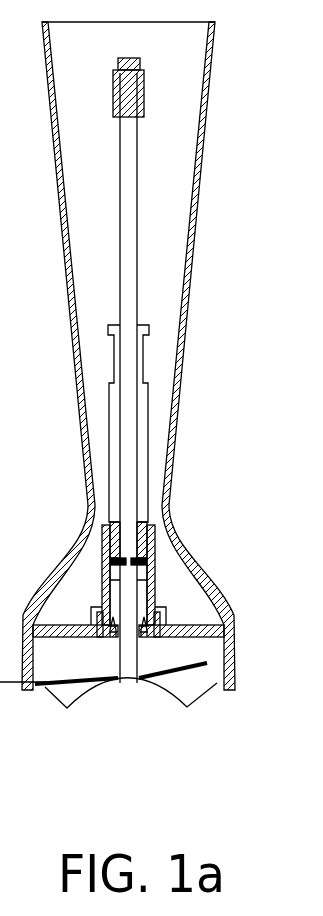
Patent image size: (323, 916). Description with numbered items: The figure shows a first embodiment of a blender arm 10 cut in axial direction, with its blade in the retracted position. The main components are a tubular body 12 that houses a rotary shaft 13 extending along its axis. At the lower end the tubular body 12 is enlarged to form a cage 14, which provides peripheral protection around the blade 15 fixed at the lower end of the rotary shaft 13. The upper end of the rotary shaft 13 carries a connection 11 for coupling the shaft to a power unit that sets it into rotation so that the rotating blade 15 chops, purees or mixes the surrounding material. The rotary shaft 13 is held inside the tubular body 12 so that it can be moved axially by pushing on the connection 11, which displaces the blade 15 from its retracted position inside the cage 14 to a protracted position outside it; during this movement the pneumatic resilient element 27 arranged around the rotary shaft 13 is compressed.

The blender arm 10 is at (154, 403).
The connection 11 is at (145, 92).
The tubular body 12 is at (204, 143).
The rotary shaft 13 is at (138, 160).
The cage 14 is at (234, 658).
The blade 15 is at (172, 677).
The pneumatic resilient element 27 is at (148, 384).